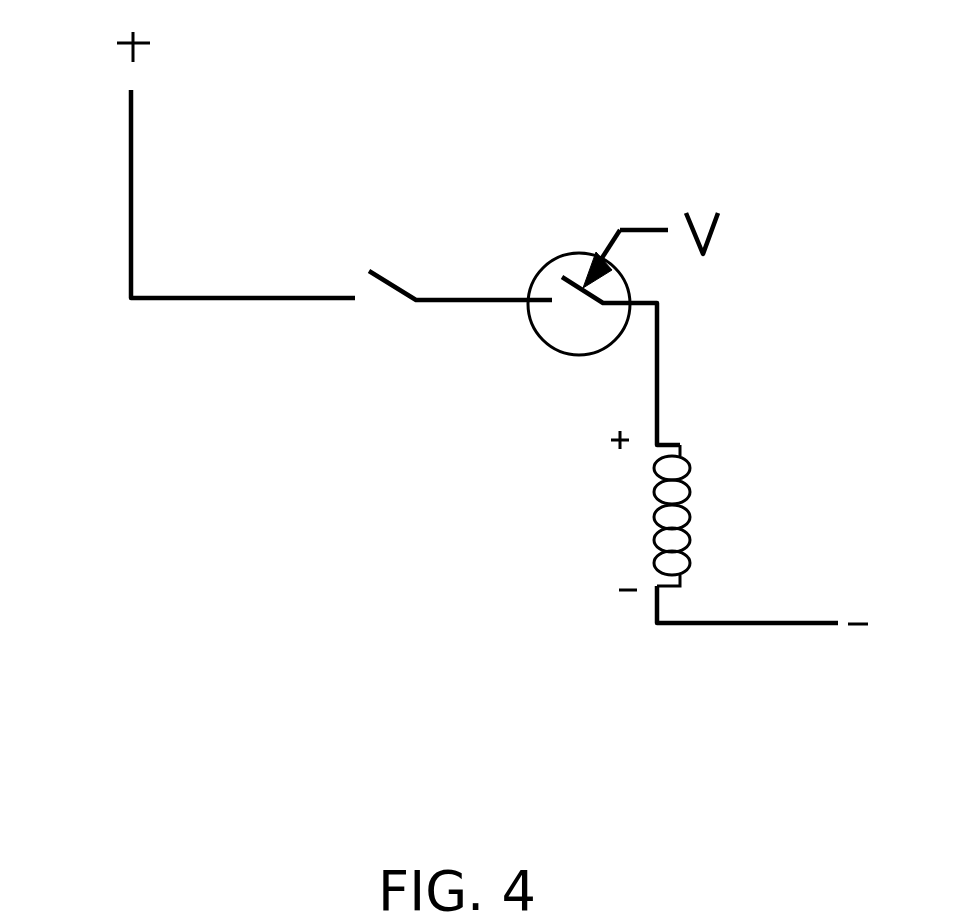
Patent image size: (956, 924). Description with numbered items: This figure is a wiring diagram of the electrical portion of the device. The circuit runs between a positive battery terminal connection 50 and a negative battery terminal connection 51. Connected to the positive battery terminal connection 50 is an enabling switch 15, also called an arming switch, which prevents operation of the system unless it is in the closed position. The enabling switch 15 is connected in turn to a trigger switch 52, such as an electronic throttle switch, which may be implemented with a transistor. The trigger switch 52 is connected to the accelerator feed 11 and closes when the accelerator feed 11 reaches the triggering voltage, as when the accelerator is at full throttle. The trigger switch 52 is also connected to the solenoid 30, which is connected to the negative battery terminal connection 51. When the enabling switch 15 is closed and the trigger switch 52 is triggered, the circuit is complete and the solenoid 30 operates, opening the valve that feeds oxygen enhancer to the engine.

The positive battery terminal connection 50 is at (110, 44).
The enabling switch 15 is at (377, 300).
The trigger switch 52 is at (535, 338).
The accelerator feed 11 is at (720, 238).
The solenoid 30 is at (690, 502).
The negative battery terminal connection 51 is at (862, 632).